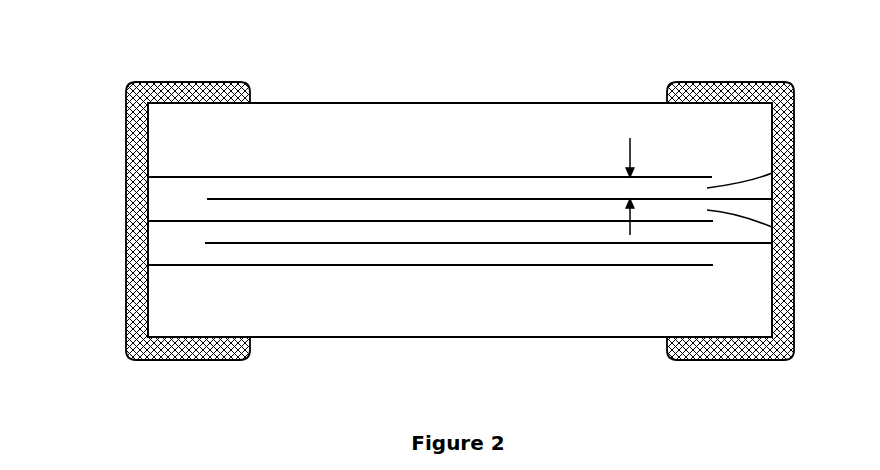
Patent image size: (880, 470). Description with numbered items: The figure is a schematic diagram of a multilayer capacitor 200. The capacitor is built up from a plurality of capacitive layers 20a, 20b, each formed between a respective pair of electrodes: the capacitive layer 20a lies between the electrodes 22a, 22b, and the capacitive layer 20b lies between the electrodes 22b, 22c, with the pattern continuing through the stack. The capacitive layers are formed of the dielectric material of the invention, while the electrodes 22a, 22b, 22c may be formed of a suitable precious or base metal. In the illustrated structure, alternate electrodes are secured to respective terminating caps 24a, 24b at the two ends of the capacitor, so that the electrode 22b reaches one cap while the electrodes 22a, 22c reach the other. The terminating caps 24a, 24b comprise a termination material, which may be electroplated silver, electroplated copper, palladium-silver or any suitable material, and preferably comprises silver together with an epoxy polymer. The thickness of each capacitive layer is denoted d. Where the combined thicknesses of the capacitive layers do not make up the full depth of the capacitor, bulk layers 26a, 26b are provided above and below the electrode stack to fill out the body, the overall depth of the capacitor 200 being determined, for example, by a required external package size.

The multilayer capacitor 200 is at (633, 88).
The terminating cap 24a is at (193, 82).
The terminating cap 24b is at (730, 82).
The bulk layer 26a is at (466, 118).
The bulk layer 26b is at (592, 325).
The electrode 22a is at (178, 177).
The electrode 22b is at (207, 198).
The electrode 22c is at (178, 221).
The capacitive layer 20a is at (794, 164).
The capacitive layer 20b is at (794, 233).
The thickness of capacitive layer d is at (636, 186).